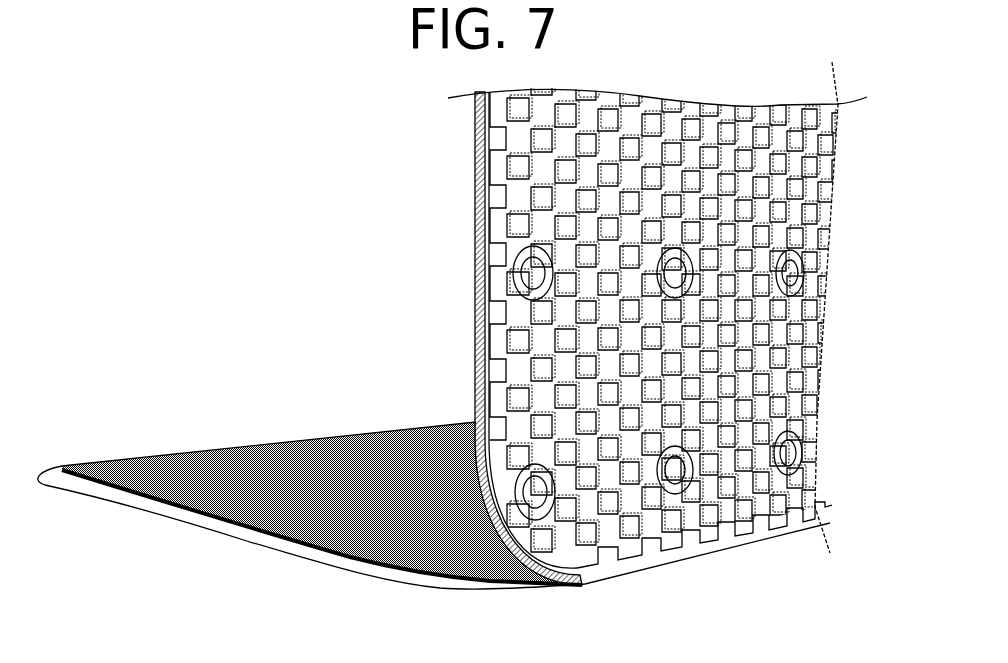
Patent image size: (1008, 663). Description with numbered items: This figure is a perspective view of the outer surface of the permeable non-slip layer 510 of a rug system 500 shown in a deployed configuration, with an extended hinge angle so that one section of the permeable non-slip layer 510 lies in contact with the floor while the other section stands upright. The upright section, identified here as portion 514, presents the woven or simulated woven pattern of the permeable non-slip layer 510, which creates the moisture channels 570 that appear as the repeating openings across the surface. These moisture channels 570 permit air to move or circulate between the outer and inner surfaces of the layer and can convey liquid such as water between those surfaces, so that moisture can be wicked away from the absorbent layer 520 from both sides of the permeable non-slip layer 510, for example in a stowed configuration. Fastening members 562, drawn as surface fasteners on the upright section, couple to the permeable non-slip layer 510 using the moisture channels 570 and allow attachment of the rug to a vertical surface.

The rug system 500 is at (287, 262).
The permeable non-slip layer 510 is at (477, 589).
The upstanding panel 514 is at (792, 362).
The absorbent layer 520 is at (250, 482).
The fastening members 562 is at (537, 493).
The moisture channels 570 is at (737, 282).